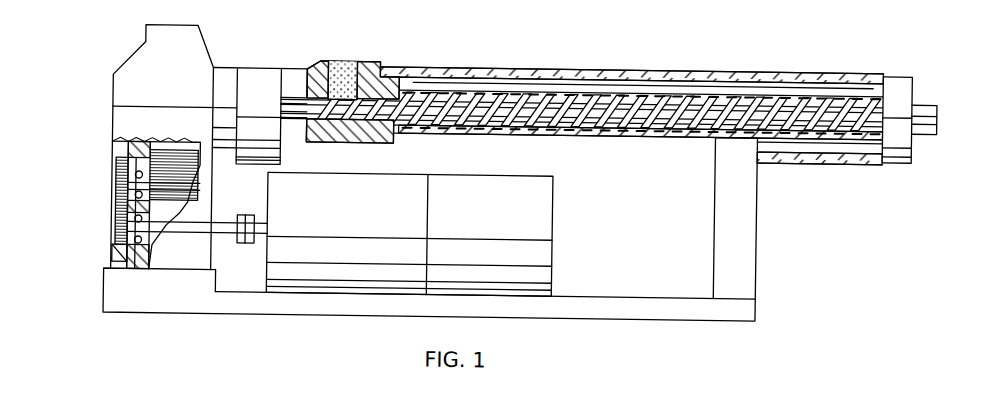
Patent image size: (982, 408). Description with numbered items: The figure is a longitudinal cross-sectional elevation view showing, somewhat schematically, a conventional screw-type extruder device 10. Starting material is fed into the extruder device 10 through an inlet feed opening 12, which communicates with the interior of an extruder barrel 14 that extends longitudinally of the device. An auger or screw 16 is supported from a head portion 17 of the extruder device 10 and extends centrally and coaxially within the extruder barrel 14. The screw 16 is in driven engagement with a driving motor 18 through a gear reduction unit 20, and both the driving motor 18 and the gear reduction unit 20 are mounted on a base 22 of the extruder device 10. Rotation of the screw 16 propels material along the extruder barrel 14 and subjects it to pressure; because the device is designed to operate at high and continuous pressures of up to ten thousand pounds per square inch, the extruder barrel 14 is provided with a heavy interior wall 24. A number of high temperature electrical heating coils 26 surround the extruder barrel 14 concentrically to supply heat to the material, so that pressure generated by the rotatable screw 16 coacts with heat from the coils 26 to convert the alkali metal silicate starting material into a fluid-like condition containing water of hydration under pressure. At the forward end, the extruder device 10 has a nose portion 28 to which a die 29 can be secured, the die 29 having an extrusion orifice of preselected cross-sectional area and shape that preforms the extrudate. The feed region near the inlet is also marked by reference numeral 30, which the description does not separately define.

The extruder device 10 is at (281, 312).
The inlet feed opening 12 is at (352, 51).
The extruder barrel 14 is at (504, 96).
The screw 16 is at (609, 106).
The head portion 17 is at (252, 71).
The driving motor 18 is at (373, 229).
The gear reduction unit 20 is at (115, 208).
The base 22 is at (752, 301).
The heavy interior wall 24 is at (579, 84).
The high temperature electrical heating coils 26 is at (554, 86).
The nose portion 28 is at (884, 64).
The die 29 is at (934, 105).
The feed hopper opening 30 is at (337, 58).